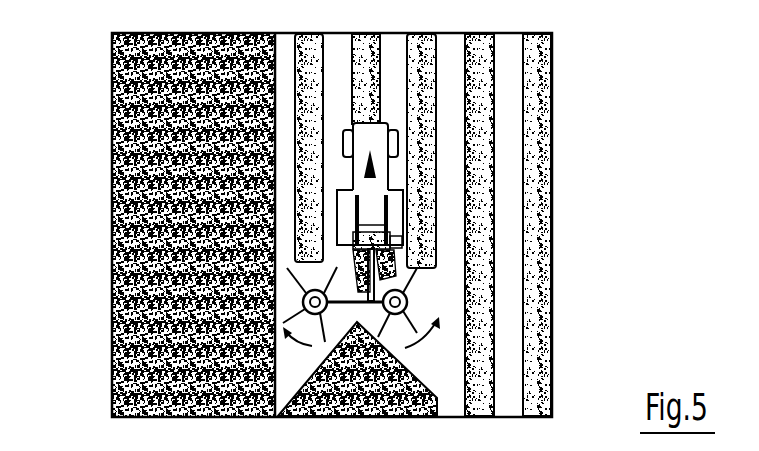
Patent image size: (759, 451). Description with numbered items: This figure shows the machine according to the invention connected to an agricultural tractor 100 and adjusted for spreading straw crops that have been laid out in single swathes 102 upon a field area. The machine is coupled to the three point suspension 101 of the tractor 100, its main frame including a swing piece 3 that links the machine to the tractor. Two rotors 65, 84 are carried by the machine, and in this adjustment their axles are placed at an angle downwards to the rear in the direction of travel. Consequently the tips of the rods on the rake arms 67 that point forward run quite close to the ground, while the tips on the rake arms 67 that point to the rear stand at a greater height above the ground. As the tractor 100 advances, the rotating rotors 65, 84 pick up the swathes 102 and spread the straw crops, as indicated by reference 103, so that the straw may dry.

The swing piece 3 is at (582, 228).
The rotor 65 is at (582, 350).
The rake arms 67 is at (298, 318).
The rotor 84 is at (303, 296).
The tractor 100 is at (370, 186).
The three point suspension 101 is at (582, 190).
The swathes 102 is at (582, 130).
The spread straw crops 103 is at (118, 329).